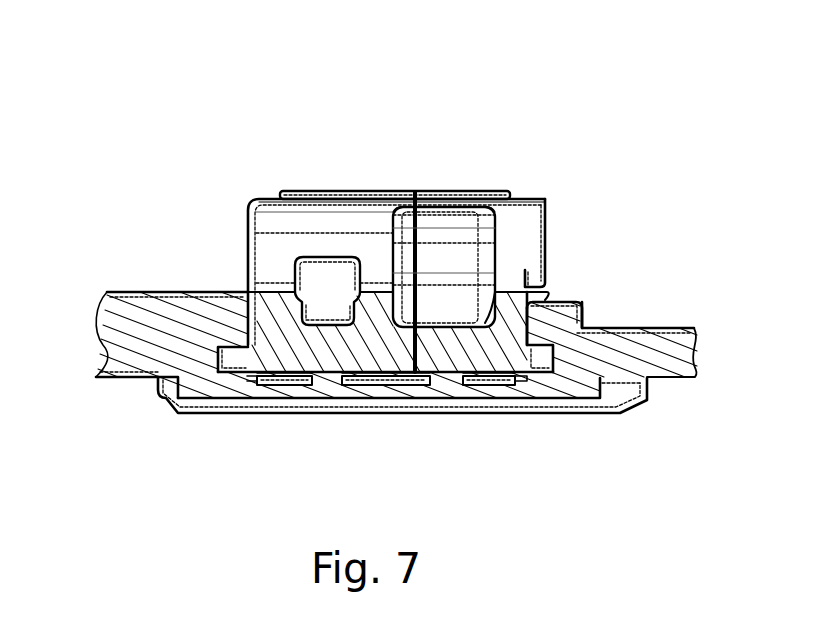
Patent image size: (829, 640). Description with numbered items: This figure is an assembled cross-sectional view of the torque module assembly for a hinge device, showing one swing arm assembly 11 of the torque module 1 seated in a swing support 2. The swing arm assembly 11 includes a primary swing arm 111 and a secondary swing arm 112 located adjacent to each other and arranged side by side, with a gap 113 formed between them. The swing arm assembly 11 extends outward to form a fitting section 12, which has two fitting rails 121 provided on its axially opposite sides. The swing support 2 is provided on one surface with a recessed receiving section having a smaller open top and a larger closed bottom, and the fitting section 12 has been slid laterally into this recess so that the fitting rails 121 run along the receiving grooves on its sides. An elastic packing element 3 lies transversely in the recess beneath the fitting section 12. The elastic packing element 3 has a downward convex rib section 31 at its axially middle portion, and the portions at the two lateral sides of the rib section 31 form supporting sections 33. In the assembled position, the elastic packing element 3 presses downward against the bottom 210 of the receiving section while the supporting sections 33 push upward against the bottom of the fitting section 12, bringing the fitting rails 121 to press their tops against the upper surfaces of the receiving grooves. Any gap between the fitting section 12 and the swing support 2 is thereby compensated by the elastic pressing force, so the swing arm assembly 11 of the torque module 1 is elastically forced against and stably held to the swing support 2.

The torque module 1 is at (216, 162).
The swing arm assembly 11 is at (530, 72).
The primary swing arm 111 is at (455, 192).
The secondary swing arm 112 is at (355, 192).
The gap 113 is at (415, 192).
The fitting section 12 is at (503, 348).
The fitting rail 121 is at (537, 360).
The swing support 2 is at (135, 355).
The bottom of the receiving section 210 is at (357, 356).
The elastic packing element 3 is at (384, 394).
The rib section 31 is at (300, 385).
The supporting section 33 is at (265, 348).